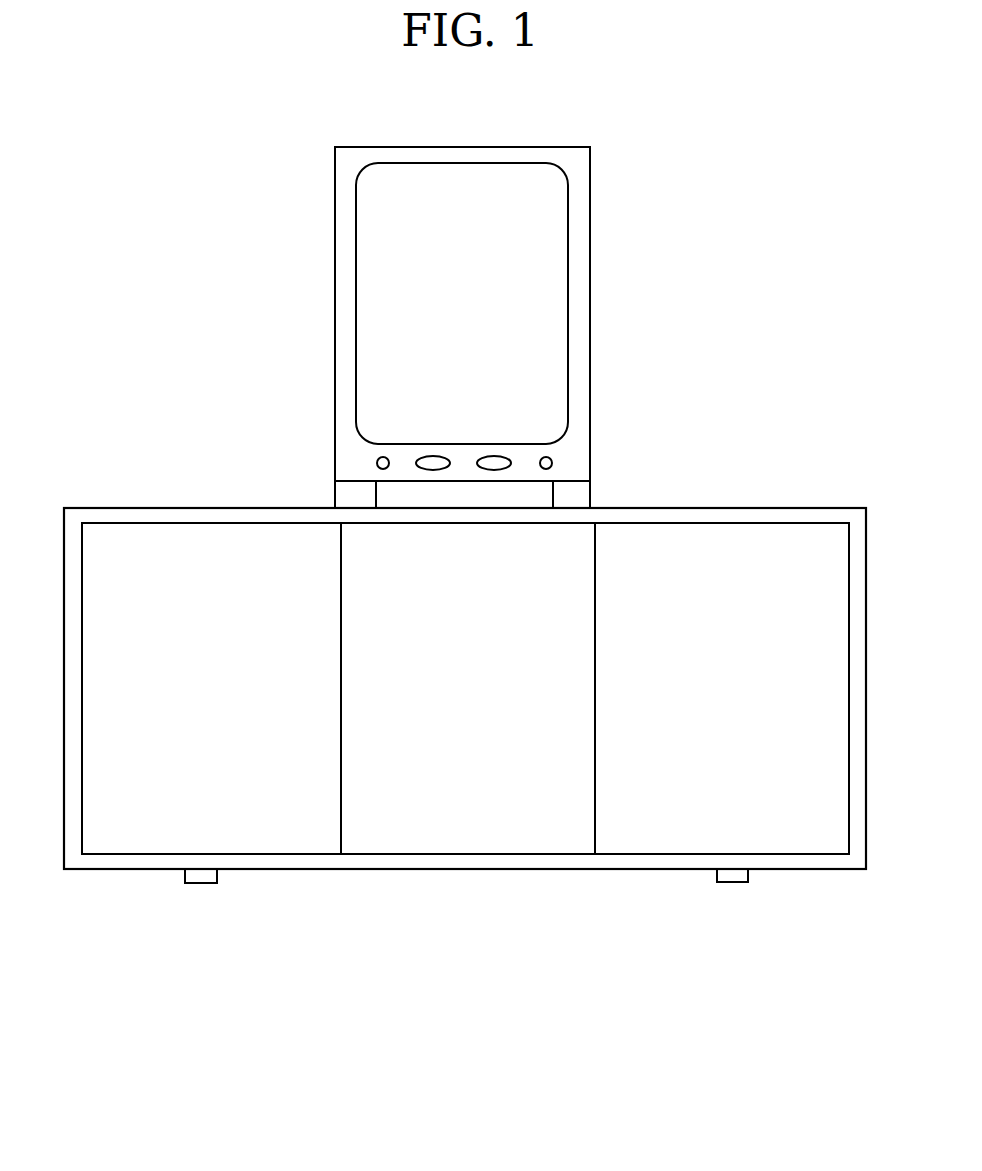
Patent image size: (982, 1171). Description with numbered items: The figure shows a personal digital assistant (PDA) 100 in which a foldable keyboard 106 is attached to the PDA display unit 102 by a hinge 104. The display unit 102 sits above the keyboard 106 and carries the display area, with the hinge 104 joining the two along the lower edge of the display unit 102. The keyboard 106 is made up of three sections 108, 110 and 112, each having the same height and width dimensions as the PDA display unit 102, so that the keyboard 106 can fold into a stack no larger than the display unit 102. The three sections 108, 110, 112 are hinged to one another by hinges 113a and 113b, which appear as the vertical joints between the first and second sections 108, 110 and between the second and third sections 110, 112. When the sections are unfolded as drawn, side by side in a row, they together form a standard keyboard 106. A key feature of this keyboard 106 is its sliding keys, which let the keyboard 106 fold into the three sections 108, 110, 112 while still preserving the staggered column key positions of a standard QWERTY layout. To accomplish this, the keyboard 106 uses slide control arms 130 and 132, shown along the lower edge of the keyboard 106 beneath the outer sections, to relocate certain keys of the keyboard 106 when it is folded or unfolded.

The personal digital assistant (PDA) 100 is at (487, 92).
The PDA display unit 102 is at (590, 210).
The hinge 104 is at (590, 493).
The keyboard 106 is at (310, 912).
The first keyboard section 108 is at (140, 507).
The second keyboard section 110 is at (450, 869).
The third keyboard section 112 is at (780, 503).
The hinge 113a is at (341, 854).
The hinge 113b is at (595, 854).
The slide control arm 130 is at (215, 884).
The slide control arm 132 is at (730, 883).